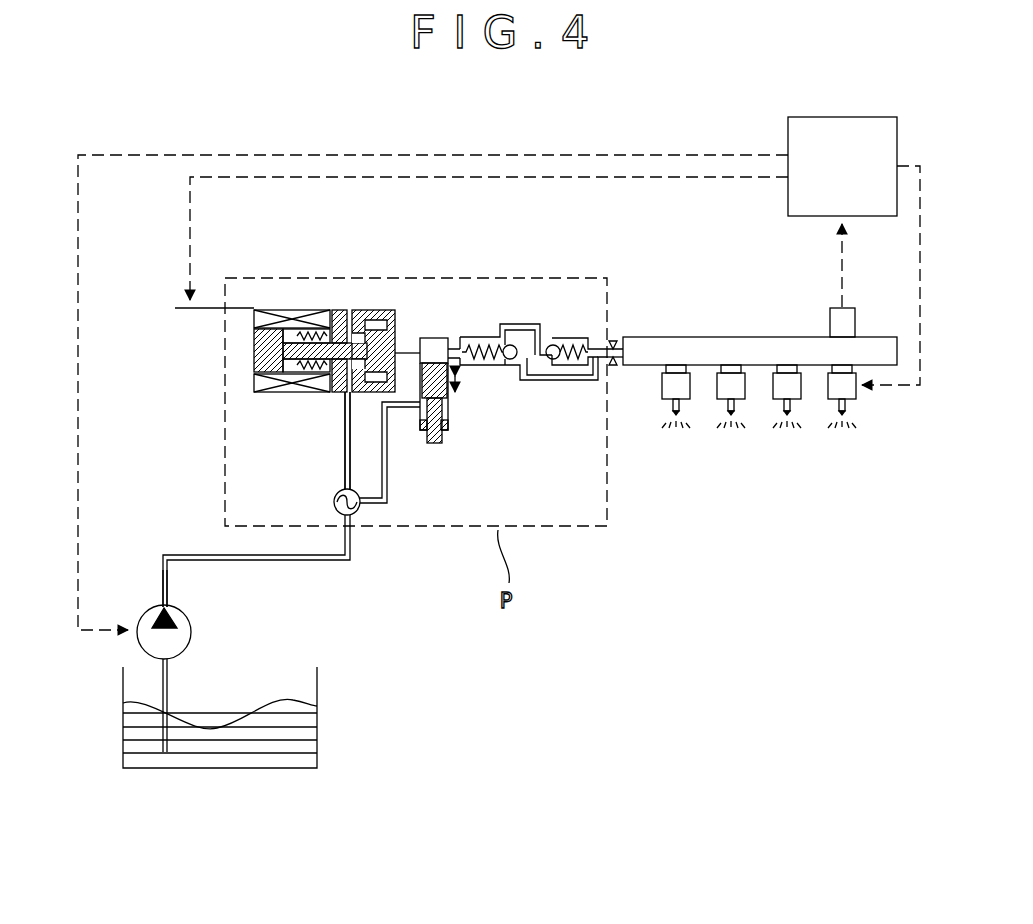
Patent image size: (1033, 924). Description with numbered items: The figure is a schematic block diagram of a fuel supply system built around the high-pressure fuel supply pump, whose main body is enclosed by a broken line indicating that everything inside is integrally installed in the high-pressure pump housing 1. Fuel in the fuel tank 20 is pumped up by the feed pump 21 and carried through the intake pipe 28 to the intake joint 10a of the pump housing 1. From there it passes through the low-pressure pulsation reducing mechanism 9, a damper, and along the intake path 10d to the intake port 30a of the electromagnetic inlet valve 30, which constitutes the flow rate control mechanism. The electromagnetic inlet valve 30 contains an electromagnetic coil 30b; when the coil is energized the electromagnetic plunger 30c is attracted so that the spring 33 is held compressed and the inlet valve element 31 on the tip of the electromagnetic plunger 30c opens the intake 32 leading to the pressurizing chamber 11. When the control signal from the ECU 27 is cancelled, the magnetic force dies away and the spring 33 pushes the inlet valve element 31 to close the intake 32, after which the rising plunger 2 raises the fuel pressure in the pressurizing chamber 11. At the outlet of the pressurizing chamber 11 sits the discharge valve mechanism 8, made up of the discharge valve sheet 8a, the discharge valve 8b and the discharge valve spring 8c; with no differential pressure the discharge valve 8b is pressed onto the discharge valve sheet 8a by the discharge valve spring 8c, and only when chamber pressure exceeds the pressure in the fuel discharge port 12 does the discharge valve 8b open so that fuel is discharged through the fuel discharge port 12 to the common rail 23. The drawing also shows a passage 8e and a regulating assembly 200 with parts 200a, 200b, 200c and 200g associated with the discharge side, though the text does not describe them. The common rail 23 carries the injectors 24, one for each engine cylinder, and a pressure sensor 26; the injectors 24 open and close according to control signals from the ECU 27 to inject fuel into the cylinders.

The high-pressure pump housing 1 is at (463, 278).
The plunger 2 is at (437, 443).
The discharge valve mechanism 8 is at (560, 291).
The discharge valve sheet 8a is at (548, 343).
The discharge valve 8b is at (552, 343).
The discharge valve spring 8c is at (576, 305).
The passage 8e is at (507, 325).
The low-pressure pulsation reducing mechanism 9 is at (333, 503).
The intake joint 10a is at (352, 522).
The intake path 10d is at (343, 462).
The pressurizing chamber 11 is at (435, 335).
The fuel discharge port 12 is at (605, 347).
The fuel tank 20 is at (310, 745).
The feed pump 21 is at (183, 637).
The common rail 23 is at (702, 353).
The injectors 24 is at (848, 397).
The pressure sensor 26 is at (830, 320).
The ECU 27 is at (788, 135).
The intake pipe 28 is at (167, 580).
The electromagnetic inlet valve 30 is at (295, 353).
The intake port 30a is at (345, 395).
The electromagnetic coil 30b is at (293, 320).
The electromagnetic plunger 30c is at (253, 352).
The inlet valve element 31 is at (373, 330).
The intake 32 is at (357, 323).
The spring 33 is at (318, 330).
The pressure regulating assembly 200 is at (540, 361).
The regulating ball 200a is at (512, 360).
The regulating valve 200b is at (518, 439).
The regulating spring 200c is at (480, 360).
The regulating passage 200g is at (582, 378).